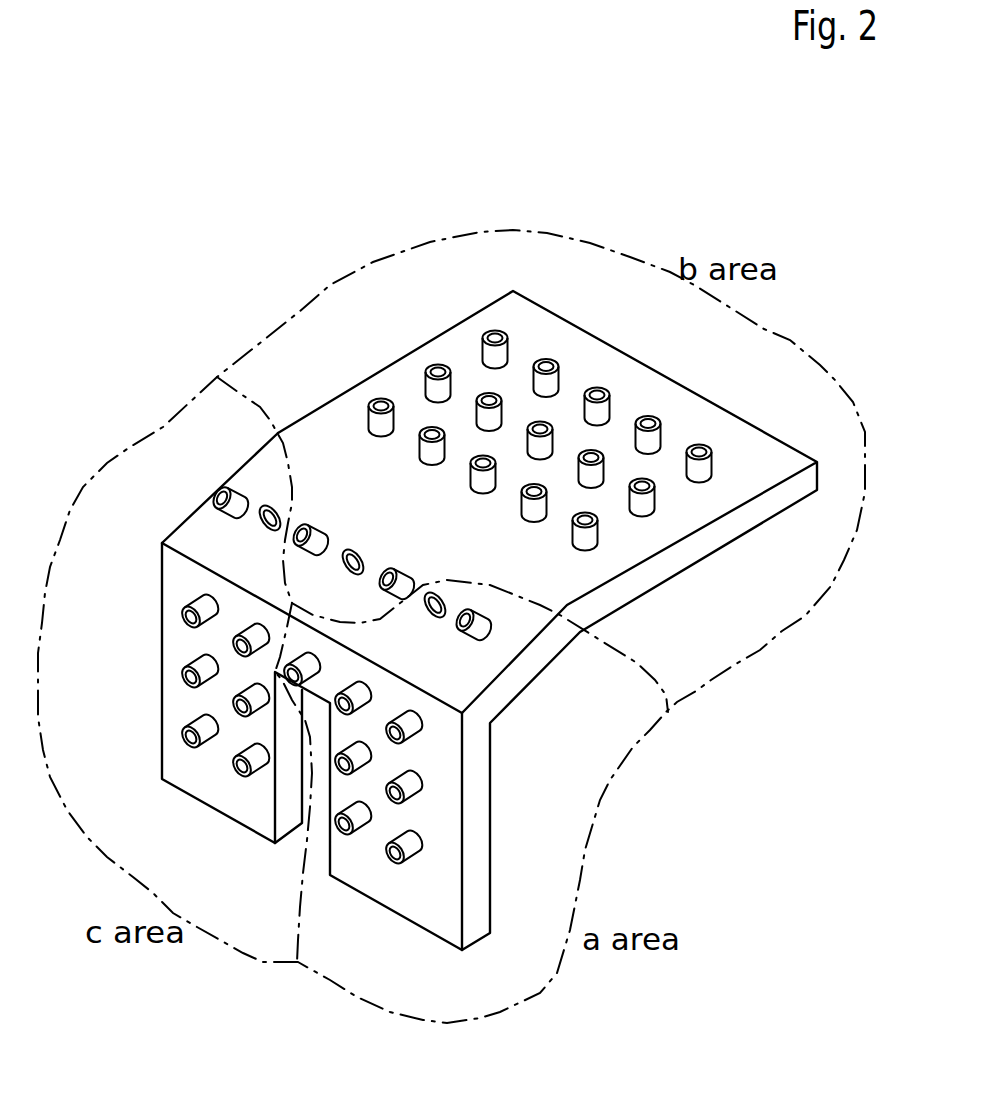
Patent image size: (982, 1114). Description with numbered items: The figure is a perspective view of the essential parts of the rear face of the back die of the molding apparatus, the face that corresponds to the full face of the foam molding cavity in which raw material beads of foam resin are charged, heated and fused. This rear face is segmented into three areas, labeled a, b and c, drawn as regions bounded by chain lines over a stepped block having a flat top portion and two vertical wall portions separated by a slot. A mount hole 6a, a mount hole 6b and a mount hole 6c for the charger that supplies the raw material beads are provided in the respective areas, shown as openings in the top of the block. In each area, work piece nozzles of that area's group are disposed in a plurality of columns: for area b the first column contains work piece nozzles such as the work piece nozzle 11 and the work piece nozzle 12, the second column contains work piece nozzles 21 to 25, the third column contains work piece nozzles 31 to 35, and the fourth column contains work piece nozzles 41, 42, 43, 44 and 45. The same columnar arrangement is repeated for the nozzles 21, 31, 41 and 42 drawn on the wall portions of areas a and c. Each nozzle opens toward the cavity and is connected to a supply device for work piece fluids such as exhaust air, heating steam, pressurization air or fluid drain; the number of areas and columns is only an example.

The work piece nozzle 11 is at (214, 504).
The work piece nozzle 12 is at (314, 532).
The work piece nozzle 21 is at (592, 535).
The work piece nozzle 25 is at (368, 407).
The work piece nozzle 31 is at (653, 500).
The work piece nozzle 35 is at (426, 371).
The work piece nozzle 41 is at (712, 457).
The work piece nozzle 42 is at (662, 427).
The work piece nozzle 43 is at (610, 402).
The work piece nozzle 44 is at (560, 370).
The work piece nozzle 45 is at (508, 342).
The mount hole 6a is at (428, 620).
The mount hole 6b is at (360, 553).
The mount hole 6c is at (262, 524).